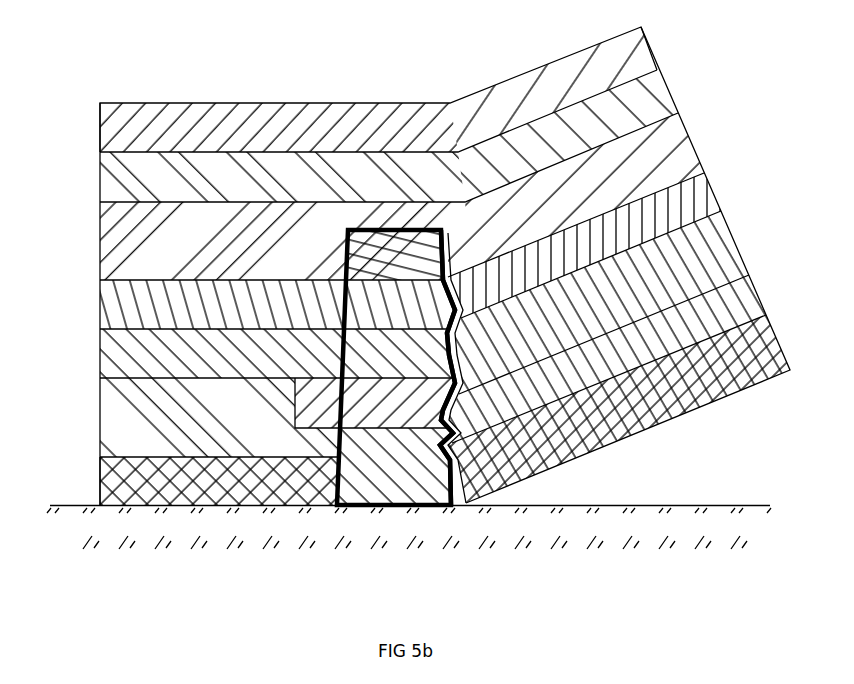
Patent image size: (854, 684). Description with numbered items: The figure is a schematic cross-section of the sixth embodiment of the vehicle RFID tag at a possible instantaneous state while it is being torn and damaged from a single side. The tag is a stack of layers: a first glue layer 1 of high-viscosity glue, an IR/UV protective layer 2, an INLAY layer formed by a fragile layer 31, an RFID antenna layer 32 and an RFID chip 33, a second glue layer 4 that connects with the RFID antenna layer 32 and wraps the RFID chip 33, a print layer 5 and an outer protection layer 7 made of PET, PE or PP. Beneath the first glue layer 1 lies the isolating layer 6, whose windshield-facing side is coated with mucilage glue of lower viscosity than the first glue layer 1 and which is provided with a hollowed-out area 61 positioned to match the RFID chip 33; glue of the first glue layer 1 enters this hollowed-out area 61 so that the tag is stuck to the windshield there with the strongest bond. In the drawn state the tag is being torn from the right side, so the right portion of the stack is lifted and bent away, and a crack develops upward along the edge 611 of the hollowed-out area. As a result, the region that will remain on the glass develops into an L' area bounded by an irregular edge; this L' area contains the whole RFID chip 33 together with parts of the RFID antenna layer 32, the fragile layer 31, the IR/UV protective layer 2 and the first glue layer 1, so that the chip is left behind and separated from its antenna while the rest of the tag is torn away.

The first glue layer 1 is at (100, 437).
The IR/UV protective layer 2 is at (295, 403).
The fragile layer 31 is at (100, 354).
The RFID antenna layer 32 is at (100, 303).
The RFID chip 33 is at (348, 258).
The second glue layer 4 is at (100, 217).
The print layer 5 is at (100, 177).
The isolating layer 6 is at (100, 482).
The protection layer 7 is at (100, 125).
The hollowed-out area 61 is at (448, 487).
The hollowed-out area edge 611 is at (467, 488).
The L' area L' is at (385, 424).